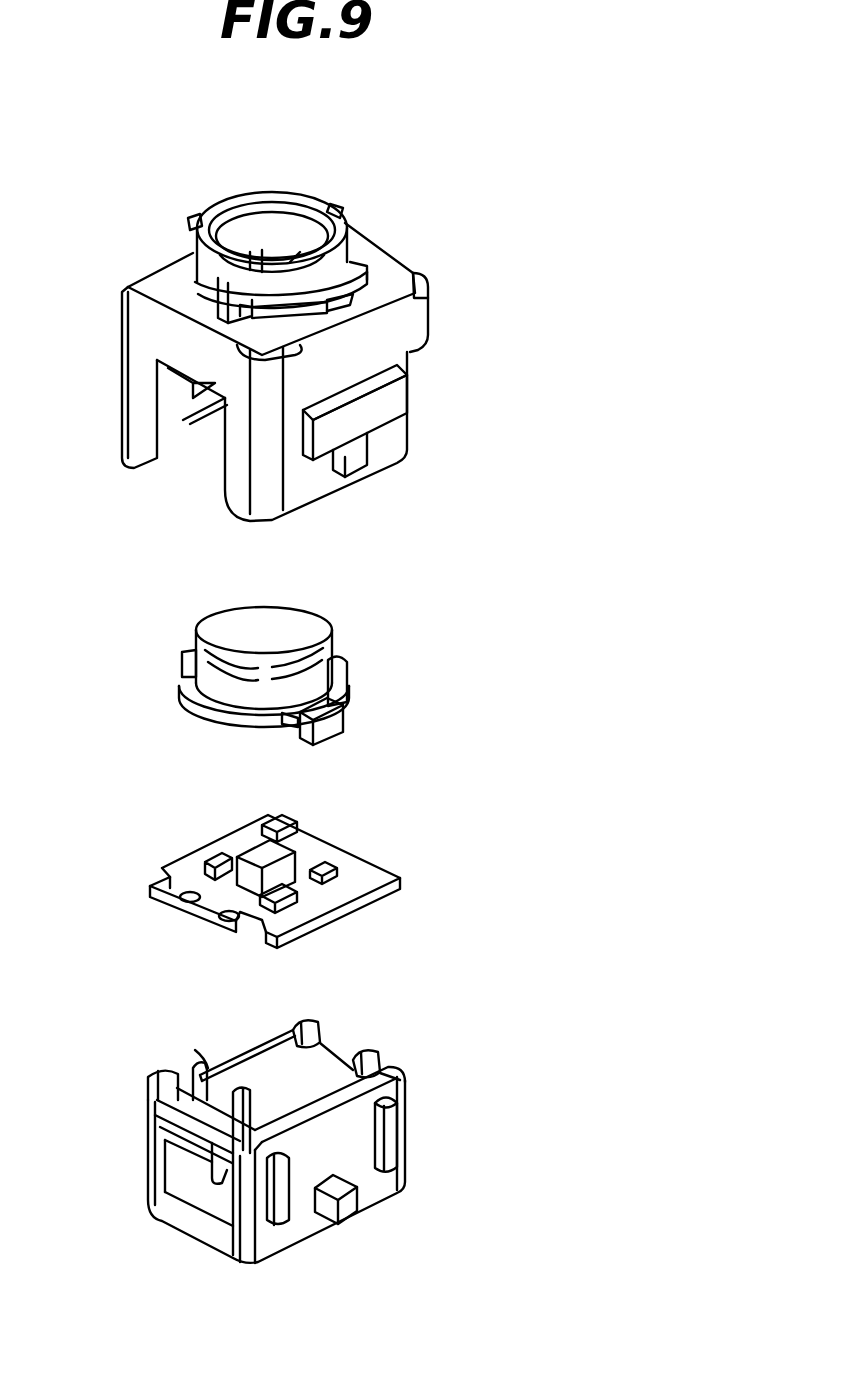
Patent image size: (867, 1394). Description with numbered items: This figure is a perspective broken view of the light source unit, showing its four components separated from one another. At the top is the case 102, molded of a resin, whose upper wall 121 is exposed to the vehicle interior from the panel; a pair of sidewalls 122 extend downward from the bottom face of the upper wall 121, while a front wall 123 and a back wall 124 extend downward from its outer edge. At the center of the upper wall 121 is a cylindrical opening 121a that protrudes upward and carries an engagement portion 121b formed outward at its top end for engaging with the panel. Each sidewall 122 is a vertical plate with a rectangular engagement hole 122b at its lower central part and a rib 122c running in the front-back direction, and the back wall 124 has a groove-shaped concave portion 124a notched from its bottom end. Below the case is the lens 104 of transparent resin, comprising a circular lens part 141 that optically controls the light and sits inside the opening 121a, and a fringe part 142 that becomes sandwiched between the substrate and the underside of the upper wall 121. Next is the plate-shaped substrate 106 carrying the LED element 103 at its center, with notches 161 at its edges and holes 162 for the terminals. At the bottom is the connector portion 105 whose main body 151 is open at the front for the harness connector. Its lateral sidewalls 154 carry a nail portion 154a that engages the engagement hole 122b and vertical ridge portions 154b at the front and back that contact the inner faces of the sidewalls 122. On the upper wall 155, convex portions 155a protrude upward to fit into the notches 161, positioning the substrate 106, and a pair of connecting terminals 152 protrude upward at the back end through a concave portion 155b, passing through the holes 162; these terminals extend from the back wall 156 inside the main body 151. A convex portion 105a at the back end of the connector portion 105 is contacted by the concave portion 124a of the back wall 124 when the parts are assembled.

The case 102 is at (445, 248).
The upper wall 121 is at (167, 272).
The opening 121a is at (232, 240).
The engagement portion 121b is at (309, 200).
The sidewall 122 is at (173, 418).
The engagement hole 122b is at (350, 467).
The rib 122c is at (390, 388).
The front wall 123 is at (412, 313).
The back wall 124 is at (147, 328).
The concave portion 124a is at (160, 385).
The lens 104 is at (368, 632).
The lens part 141 is at (233, 632).
The fringe part 142 is at (183, 660).
The substrate 106 is at (390, 855).
The LED element 103 is at (257, 855).
The notch 161 is at (297, 833).
The hole 162 is at (217, 927).
The connector portion 105 is at (425, 1110).
The main body 151 is at (390, 1195).
The connecting terminal 152 is at (210, 1060).
The sidewall 154 is at (357, 1152).
The nail portion 154a is at (340, 1225).
The ridge portion 154b is at (398, 1110).
The upper wall 155 is at (263, 1062).
The convex portion 155a is at (162, 1075).
The concave portion 155b is at (170, 1127).
The convex portion 105a is at (187, 1163).
The back wall 156 is at (197, 1220).